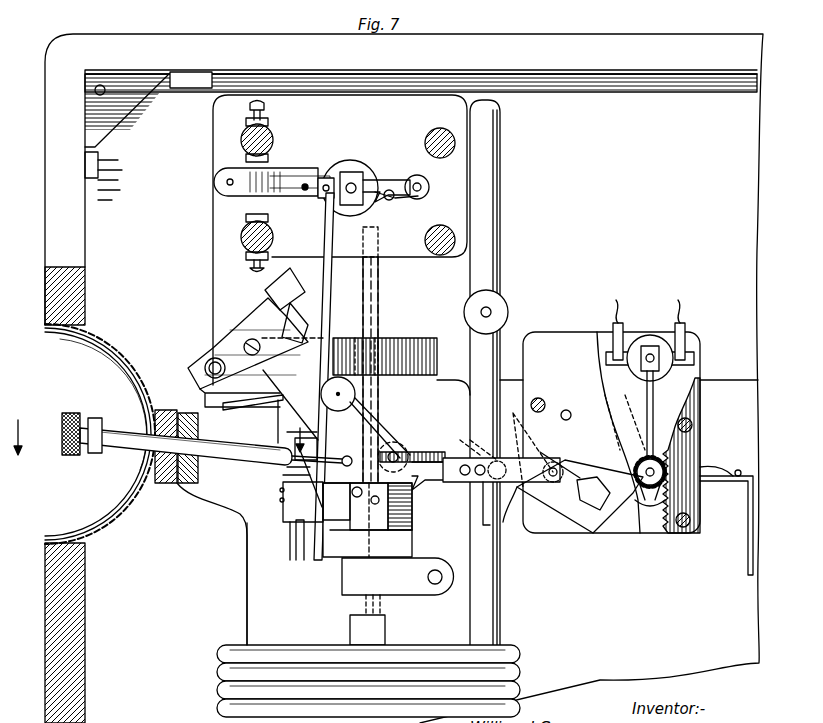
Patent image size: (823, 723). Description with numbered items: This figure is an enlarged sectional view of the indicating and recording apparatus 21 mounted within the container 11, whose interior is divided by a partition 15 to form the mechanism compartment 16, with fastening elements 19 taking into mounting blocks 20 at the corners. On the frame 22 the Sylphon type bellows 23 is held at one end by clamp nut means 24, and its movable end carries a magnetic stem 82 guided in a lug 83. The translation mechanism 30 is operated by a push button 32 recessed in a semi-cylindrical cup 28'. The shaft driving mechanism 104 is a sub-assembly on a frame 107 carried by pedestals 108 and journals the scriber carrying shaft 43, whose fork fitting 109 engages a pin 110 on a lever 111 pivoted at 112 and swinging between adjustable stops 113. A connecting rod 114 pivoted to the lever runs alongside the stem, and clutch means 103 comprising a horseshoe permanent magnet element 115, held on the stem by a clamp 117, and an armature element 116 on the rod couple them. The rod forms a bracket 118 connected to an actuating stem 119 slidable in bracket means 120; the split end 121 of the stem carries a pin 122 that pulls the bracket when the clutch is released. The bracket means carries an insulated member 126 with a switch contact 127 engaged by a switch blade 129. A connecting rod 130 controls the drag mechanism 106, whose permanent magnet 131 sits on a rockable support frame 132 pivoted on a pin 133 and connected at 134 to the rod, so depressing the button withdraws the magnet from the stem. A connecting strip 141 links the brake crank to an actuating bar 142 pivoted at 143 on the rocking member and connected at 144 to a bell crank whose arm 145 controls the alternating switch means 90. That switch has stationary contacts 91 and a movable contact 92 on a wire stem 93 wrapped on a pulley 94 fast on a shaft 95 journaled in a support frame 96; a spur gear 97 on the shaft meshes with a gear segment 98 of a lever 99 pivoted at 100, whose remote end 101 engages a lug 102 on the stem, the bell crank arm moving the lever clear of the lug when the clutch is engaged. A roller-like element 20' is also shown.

The container 11 is at (52, 115).
The partition 15 is at (290, 428).
The mechanism compartment 16 is at (100, 240).
The fastening elements 19 is at (100, 85).
The mounting blocks 20 is at (126, 137).
The roller 20' is at (501, 312).
The indicating and recording apparatus 21 is at (554, 220).
The frame 22 is at (222, 278).
The bellows 23 is at (217, 692).
The clamp nut means 24 is at (386, 630).
The semi-cylindrical sheet metal cup 28' is at (100, 437).
The translation mechanism 30 is at (237, 534).
The push button 32 is at (70, 413).
The scriber carrying shaft 43 is at (417, 178).
The stem 82 is at (355, 395).
The lug 83 is at (395, 350).
The alternating switch means 90 is at (708, 334).
The stationary contacts 91 is at (672, 345).
The movable contact 92 is at (650, 345).
The stem 93 is at (653, 405).
The pulley 94 is at (672, 466).
The shaft 95 is at (648, 495).
The support frame 96 is at (700, 404).
The spur gear 97 is at (640, 430).
The gear segment 98 is at (595, 476).
The lever 99 is at (523, 505).
The pivot 100 is at (555, 460).
The remote end 101 is at (433, 472).
The lug 102 is at (438, 592).
The clutch means 103 is at (295, 565).
The shaft driving mechanism 104 is at (438, 188).
The drag mechanism 106 is at (396, 292).
The frame 107 is at (388, 130).
The pedestals 108 is at (243, 140).
The fork fitting 109 is at (395, 200).
The pin 110 is at (389, 190).
The lever 111 is at (292, 175).
The pivot 112 is at (305, 192).
The adjustable stops 113 is at (258, 212).
The connecting rod 114 is at (330, 232).
The permanent magnet element 115 is at (342, 560).
The armature element 116 is at (318, 540).
The clamp 117 is at (385, 520).
The bracket 118 is at (283, 398).
The actuating stem 119 is at (102, 448).
The bracket means 120 is at (183, 490).
The split end 121 is at (250, 445).
The pin 122 is at (276, 468).
The insulated member 126 is at (200, 420).
The switch contact 127 is at (186, 372).
The switch blade 129 is at (192, 360).
The connecting rod 130 is at (283, 518).
The permanent magnet 131 is at (343, 318).
The rockable support frame 132 is at (215, 338).
The pin 133 is at (372, 406).
The pivotal connection 134 is at (290, 528).
The connecting strip 141 is at (747, 566).
The actuating bar 142 is at (480, 455).
The pivot 143 is at (405, 458).
The pivotal connection 144 is at (512, 435).
The bell crank arm 145 is at (483, 525).